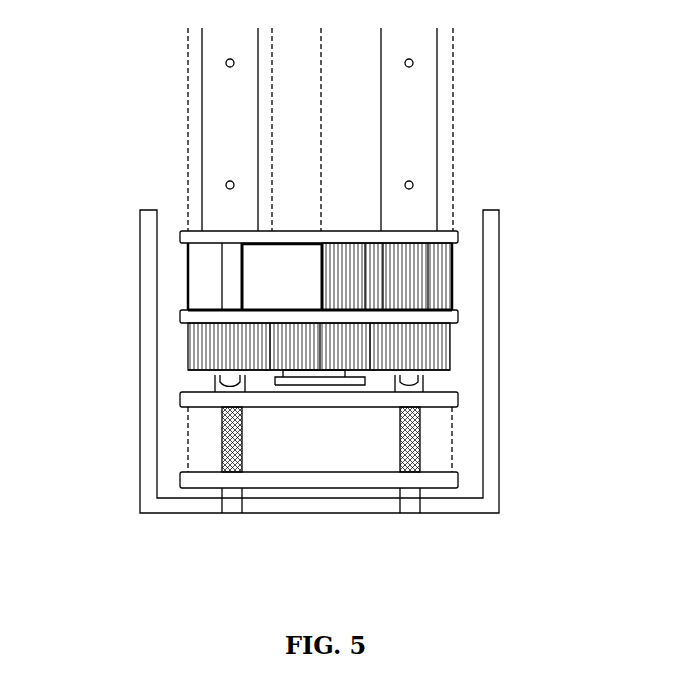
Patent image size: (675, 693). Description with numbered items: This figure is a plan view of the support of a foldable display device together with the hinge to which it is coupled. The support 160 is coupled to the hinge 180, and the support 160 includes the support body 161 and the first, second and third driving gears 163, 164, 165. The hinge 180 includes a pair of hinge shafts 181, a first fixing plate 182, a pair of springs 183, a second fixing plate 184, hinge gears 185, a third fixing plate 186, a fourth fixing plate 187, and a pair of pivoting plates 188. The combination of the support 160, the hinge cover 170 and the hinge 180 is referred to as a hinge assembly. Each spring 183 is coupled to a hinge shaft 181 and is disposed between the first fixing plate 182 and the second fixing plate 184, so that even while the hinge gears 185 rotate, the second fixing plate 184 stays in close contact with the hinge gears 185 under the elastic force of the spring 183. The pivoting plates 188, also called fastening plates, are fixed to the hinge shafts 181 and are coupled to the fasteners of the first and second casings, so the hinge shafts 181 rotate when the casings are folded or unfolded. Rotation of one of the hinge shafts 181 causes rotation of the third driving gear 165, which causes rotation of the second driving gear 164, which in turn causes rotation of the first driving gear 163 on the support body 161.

The support 160 is at (66, 96).
The support body 161 is at (258, 100).
The first driving gear 163 is at (343, 256).
The second driving gear 164 is at (372, 278).
The third driving gear 165 is at (405, 298).
The hinge cover 170 is at (158, 513).
The hinge 180 is at (572, 125).
The hinge shaft 181 is at (236, 513).
The first fixing plate 182 is at (458, 481).
The spring 183 is at (420, 448).
The second fixing plate 184 is at (458, 401).
The hinge gears 185 is at (452, 356).
The third fixing plate 186 is at (458, 318).
The fourth fixing plate 187 is at (458, 238).
The pivoting plate 188 is at (418, 134).